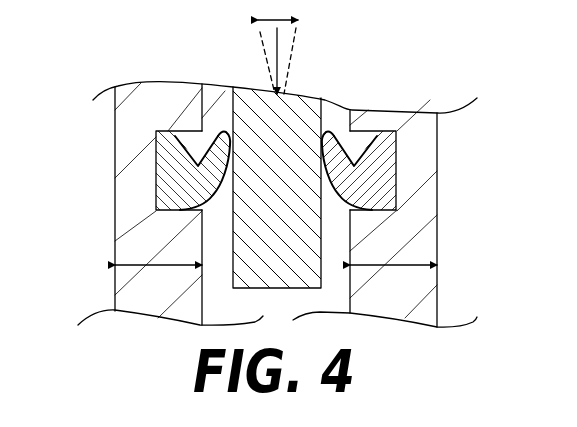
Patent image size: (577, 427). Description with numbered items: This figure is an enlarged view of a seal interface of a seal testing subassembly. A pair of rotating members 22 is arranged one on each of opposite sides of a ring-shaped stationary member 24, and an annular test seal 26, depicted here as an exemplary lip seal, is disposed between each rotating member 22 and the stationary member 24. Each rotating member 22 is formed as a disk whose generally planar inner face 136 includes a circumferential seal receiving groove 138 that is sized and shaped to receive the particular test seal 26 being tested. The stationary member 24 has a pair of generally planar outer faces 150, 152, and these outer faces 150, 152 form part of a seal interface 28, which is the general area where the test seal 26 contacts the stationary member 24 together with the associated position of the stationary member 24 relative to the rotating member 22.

The rotating member 22 is at (139, 100).
The stationary member 24 is at (290, 176).
The test seal 26 is at (183, 187).
The seal interface 28 is at (207, 141).
The inner face 136 is at (206, 88).
The seal receiving groove 138 is at (185, 141).
The outer face 150 is at (230, 263).
The outer face 152 is at (323, 258).